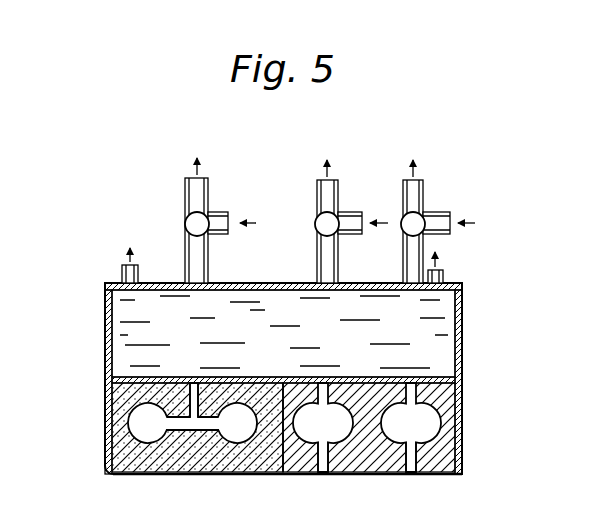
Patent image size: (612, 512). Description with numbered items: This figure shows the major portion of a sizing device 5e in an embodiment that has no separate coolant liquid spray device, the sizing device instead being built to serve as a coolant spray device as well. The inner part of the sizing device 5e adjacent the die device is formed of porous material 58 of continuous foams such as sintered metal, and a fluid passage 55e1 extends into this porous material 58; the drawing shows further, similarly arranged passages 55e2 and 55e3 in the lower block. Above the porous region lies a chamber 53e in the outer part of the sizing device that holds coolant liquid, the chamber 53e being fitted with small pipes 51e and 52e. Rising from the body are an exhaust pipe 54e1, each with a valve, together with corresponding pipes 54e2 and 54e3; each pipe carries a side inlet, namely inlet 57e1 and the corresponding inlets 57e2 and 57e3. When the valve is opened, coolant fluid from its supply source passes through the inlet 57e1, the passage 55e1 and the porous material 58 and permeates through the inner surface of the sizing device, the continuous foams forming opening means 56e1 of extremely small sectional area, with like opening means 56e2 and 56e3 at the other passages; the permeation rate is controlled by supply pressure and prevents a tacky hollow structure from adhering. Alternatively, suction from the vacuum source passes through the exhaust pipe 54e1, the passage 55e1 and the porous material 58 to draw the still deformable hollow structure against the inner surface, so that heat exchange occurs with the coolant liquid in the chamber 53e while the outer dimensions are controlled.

The sizing device 5e is at (297, 160).
The liquid inlet pipe 51e is at (137, 263).
The liquid outlet pipe 52e is at (444, 266).
The chamber 53e is at (283, 333).
The exhaust pipe 54e1 is at (245, 211).
The second gas pipe with valve 54e2 is at (361, 211).
The third gas pipe with valve 54e3 is at (482, 213).
The fluid passage 55e1 is at (140, 423).
The second circular passage 55e2 is at (333, 418).
The third circular passage 55e3 is at (422, 423).
The opening means 56e1 is at (190, 475).
The second outlet channel 56e2 is at (323, 475).
The third outlet channel 56e3 is at (409, 475).
The inlet 57e1 is at (231, 234).
The second branch pipe 57e2 is at (365, 234).
The third branch pipe 57e3 is at (452, 233).
The porous material 58 is at (197, 427).